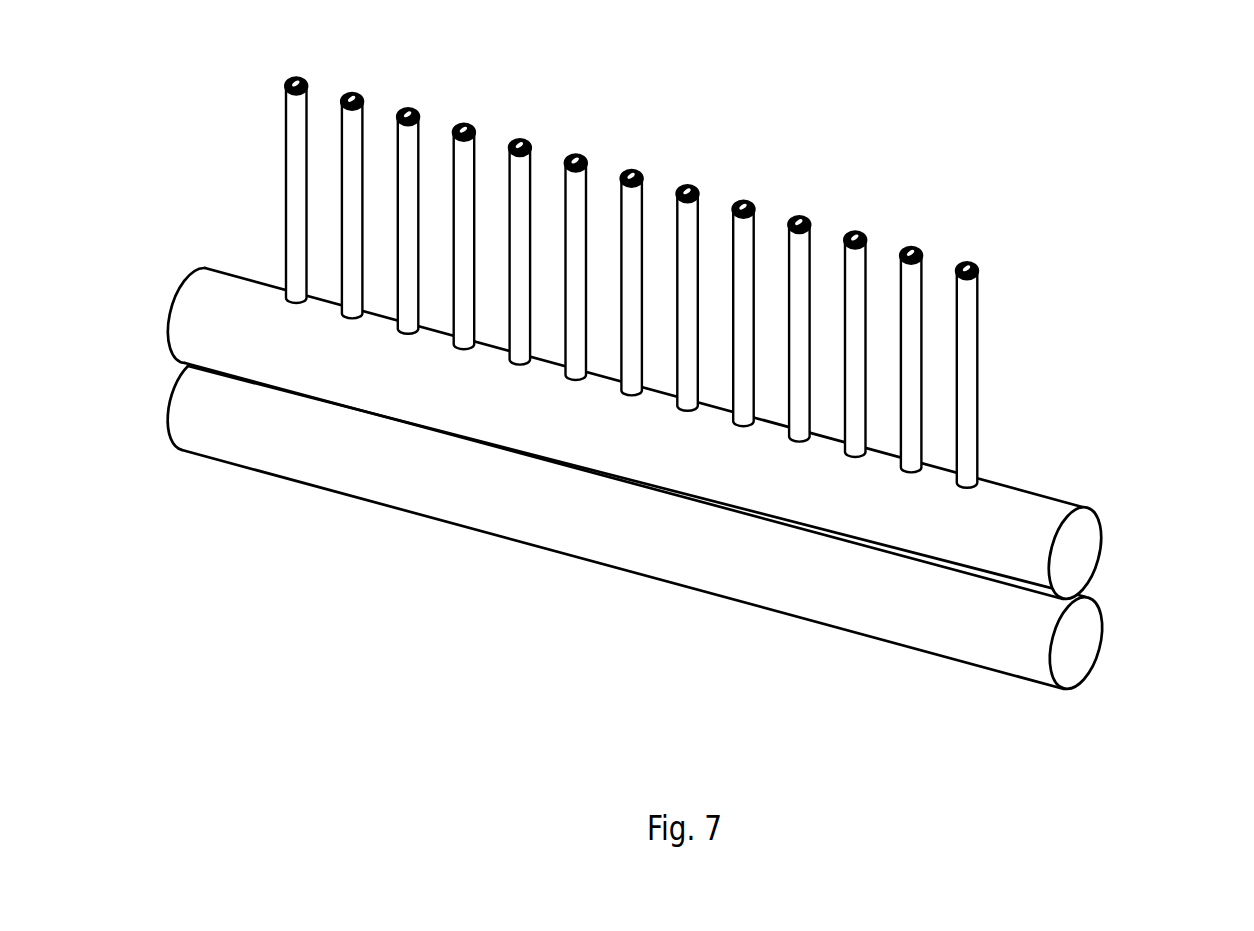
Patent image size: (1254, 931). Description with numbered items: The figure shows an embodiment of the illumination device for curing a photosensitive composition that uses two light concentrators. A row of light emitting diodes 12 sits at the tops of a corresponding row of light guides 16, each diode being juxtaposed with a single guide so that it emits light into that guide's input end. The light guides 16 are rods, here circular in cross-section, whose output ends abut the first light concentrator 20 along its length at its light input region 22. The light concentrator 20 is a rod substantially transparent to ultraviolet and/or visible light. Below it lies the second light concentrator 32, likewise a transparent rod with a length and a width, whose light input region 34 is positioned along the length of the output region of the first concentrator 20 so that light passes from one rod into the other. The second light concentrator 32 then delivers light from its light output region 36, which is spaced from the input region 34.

The light emitting diode 12 is at (757, 283).
The light guide 16 is at (978, 383).
The light concentrator 20 is at (698, 474).
The light input region 22 is at (847, 545).
The second light concentrator 32 is at (698, 575).
The light input region of the second light concentrator 34 is at (937, 568).
The light output region of the second light concentrator 36 is at (975, 667).